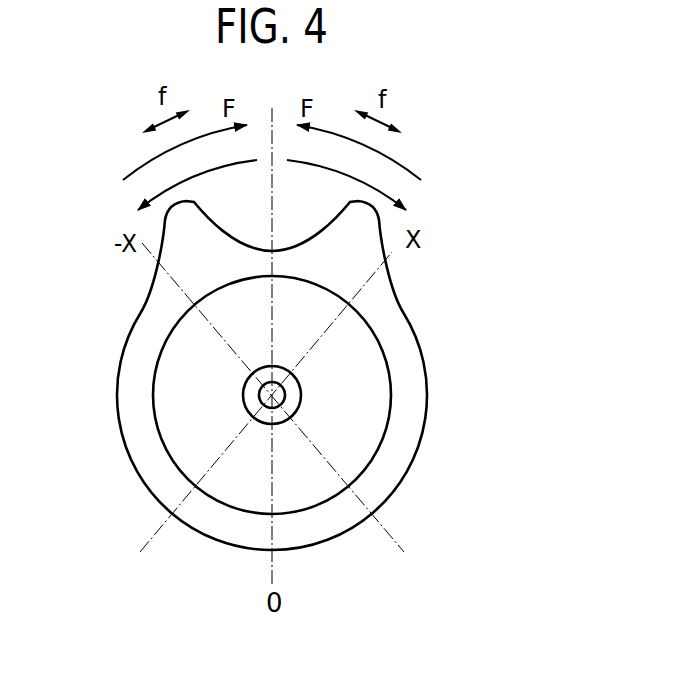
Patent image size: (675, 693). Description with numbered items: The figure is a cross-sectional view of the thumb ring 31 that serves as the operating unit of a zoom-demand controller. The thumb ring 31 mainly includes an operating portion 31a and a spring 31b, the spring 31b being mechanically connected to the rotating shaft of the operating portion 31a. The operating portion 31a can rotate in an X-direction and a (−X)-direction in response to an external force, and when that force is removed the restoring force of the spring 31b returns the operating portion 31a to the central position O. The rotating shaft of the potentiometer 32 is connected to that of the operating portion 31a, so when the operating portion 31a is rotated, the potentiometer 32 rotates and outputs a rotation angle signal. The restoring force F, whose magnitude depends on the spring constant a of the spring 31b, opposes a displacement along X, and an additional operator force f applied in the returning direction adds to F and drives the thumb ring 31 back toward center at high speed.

The thumb ring 31 is at (145, 303).
The operating portion 31a is at (378, 300).
The spring 31b is at (272, 395).
The potentiometer 32 is at (272, 395).